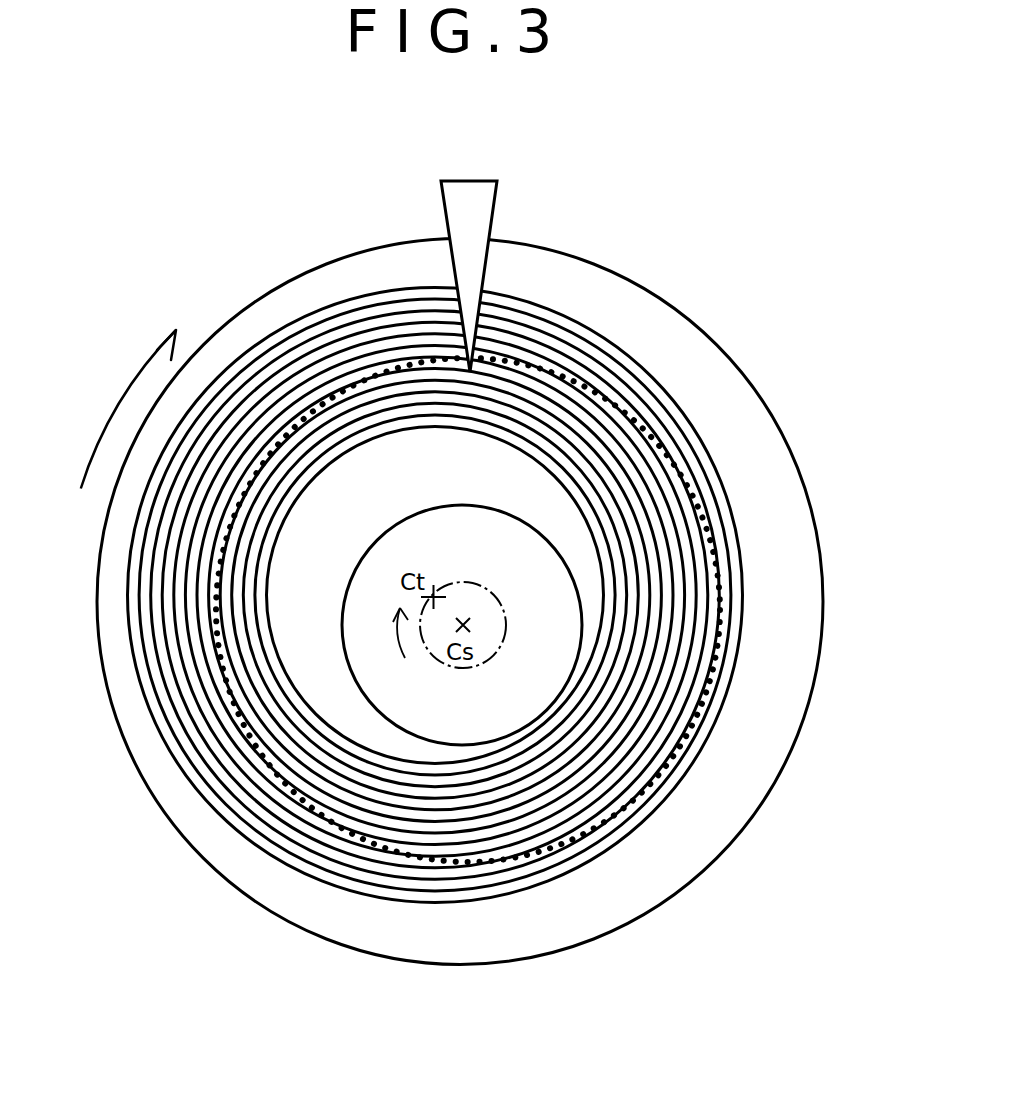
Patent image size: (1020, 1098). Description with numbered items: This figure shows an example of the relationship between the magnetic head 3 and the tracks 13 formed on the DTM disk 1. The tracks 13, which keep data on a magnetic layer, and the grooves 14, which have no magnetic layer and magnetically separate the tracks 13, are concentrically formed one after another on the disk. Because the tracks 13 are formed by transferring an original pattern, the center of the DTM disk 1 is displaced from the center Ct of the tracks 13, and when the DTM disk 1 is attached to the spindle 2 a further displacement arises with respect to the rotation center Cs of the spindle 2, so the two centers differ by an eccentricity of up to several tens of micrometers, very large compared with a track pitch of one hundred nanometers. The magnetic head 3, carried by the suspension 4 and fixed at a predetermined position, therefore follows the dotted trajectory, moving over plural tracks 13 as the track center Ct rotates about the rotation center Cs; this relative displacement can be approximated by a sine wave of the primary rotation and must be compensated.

The DTM disk 1 is at (658, 295).
The spindle 2 is at (520, 517).
The magnetic head 3 is at (483, 362).
The suspension 4 is at (497, 207).
The tracks 13 is at (312, 318).
The grooves 14 is at (247, 363).